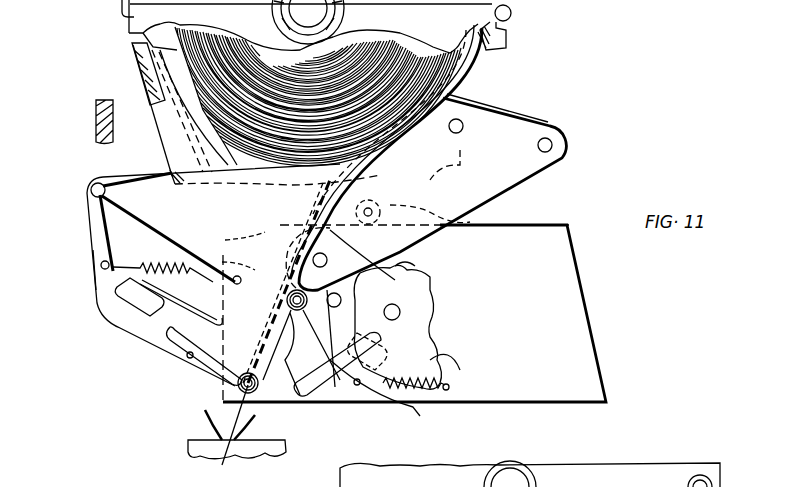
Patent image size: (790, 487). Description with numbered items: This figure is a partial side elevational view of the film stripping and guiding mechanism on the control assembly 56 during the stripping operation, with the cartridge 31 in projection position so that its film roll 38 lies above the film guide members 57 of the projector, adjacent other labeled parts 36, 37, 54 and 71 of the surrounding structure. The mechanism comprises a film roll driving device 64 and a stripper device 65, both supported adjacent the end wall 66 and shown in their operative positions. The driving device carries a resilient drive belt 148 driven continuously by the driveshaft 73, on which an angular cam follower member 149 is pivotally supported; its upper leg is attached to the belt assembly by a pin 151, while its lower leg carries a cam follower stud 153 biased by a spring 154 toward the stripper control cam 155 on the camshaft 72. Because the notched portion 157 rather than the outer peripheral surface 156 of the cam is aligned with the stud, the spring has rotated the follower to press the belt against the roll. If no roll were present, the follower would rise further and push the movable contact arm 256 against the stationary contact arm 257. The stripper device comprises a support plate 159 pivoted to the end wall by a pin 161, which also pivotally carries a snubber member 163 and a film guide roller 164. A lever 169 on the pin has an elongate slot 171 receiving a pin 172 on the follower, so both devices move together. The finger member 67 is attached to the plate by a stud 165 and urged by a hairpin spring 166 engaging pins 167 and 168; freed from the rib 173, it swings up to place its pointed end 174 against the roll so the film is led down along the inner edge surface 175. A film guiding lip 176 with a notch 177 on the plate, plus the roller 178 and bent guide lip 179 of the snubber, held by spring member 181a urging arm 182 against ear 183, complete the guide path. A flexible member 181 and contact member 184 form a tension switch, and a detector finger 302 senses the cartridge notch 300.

The cartridge 31 is at (527, 40).
The bracket 36 is at (487, 60).
The staple driver 37 is at (230, 402).
The film roll 38 is at (143, 33).
The anvil 54 is at (256, 455).
The control assembly 56 is at (584, 294).
The film guide members 57 is at (222, 445).
The film roll driving device 64 is at (506, 185).
The stripper device 65 is at (105, 306).
The end wall 66 is at (590, 373).
The finger member 67 is at (152, 211).
The plate top edge 71 is at (574, 250).
The camshaft 72 is at (400, 312).
The driveshaft 73 is at (330, 259).
The drive belt 148 is at (500, 106).
The cam follower member 149 is at (386, 398).
The pin 151 is at (400, 248).
The cam follower stud 153 is at (342, 300).
The spring 154 is at (448, 391).
The stripper control cam 155 is at (430, 340).
The outer peripheral surface 156 is at (459, 364).
The notched portion 157 is at (430, 279).
The support plate 159 is at (96, 283).
The pin 161 is at (253, 392).
The snubber member 163 is at (221, 265).
The film guide roller 164 is at (300, 410).
The stud 165 is at (91, 188).
The hairpin spring 166 is at (92, 216).
The pin 167 is at (100, 264).
The pin 168 is at (152, 165).
The lever 169 is at (318, 398).
The elongate slot 171 is at (357, 386).
The pin 172 is at (372, 362).
The rib 173 is at (95, 118).
The pointed end 174 is at (382, 151).
The inner edge surface 175 is at (280, 202).
The film guiding lip 176 is at (272, 218).
The notch 177 is at (277, 195).
The roller 178 is at (298, 310).
The guide lip 179 is at (276, 345).
The flexible member 181 is at (165, 331).
The spring member 181a is at (142, 262).
The arm 182 is at (178, 338).
The ear 183 is at (188, 358).
The contact member 184 is at (139, 299).
The movable contact arm 256 is at (358, 226).
The stationary contact arm 257 is at (223, 238).
The notch 300 is at (464, 165).
The detector finger 302 is at (478, 217).